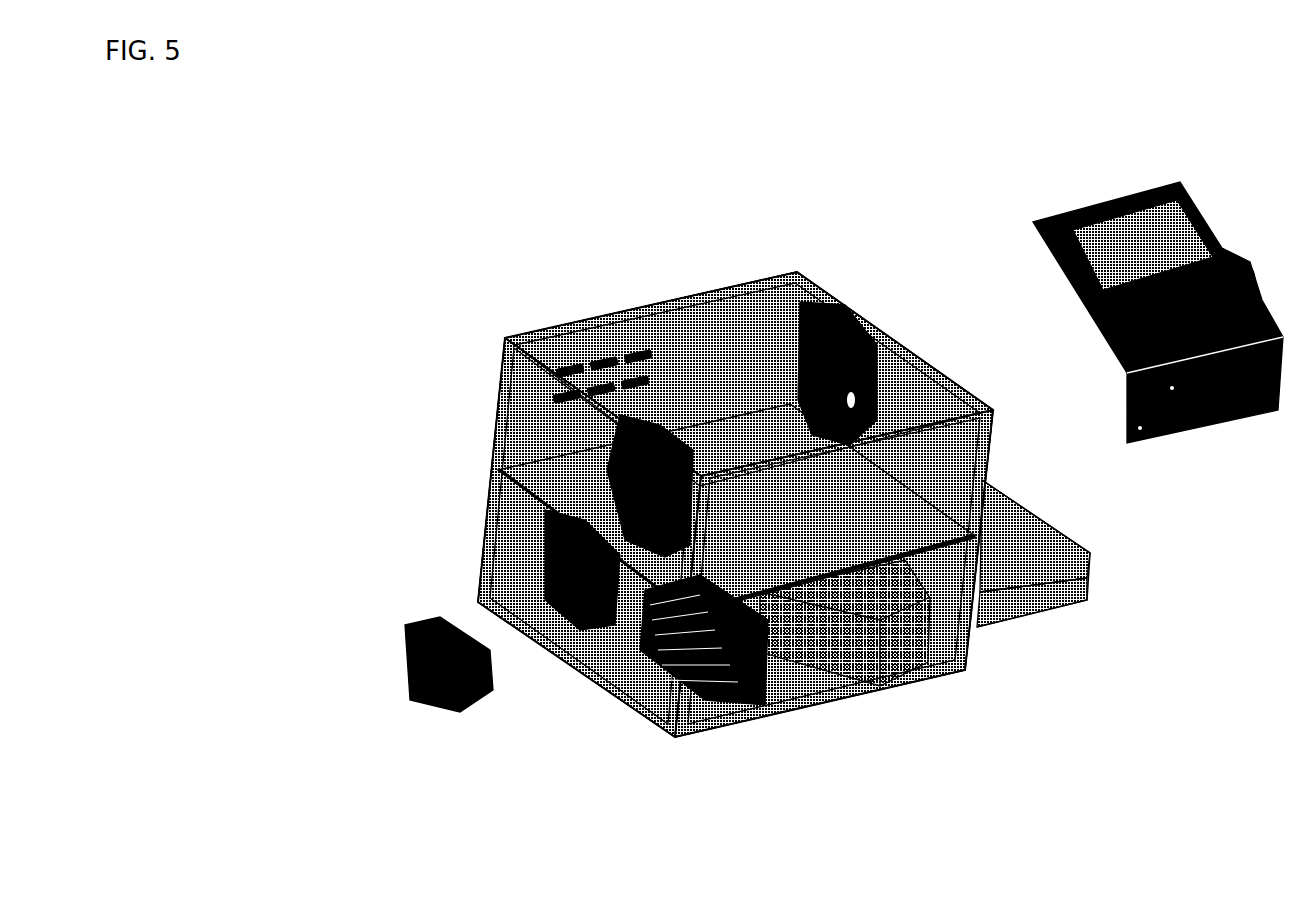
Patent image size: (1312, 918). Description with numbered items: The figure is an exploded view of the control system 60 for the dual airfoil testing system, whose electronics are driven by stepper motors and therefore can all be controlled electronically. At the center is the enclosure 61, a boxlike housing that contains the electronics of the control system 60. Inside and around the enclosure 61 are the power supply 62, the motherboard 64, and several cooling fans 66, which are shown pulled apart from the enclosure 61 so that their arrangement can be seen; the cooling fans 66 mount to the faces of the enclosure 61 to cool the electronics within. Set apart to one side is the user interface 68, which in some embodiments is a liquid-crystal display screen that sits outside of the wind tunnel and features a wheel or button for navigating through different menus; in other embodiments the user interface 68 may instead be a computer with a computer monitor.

The control system 60 is at (485, 198).
The enclosure 61 is at (727, 283).
The power supply 62 is at (735, 673).
The motherboard 64 is at (1030, 597).
The cooling fans 66 is at (833, 313).
The user interface 68 is at (1045, 212).